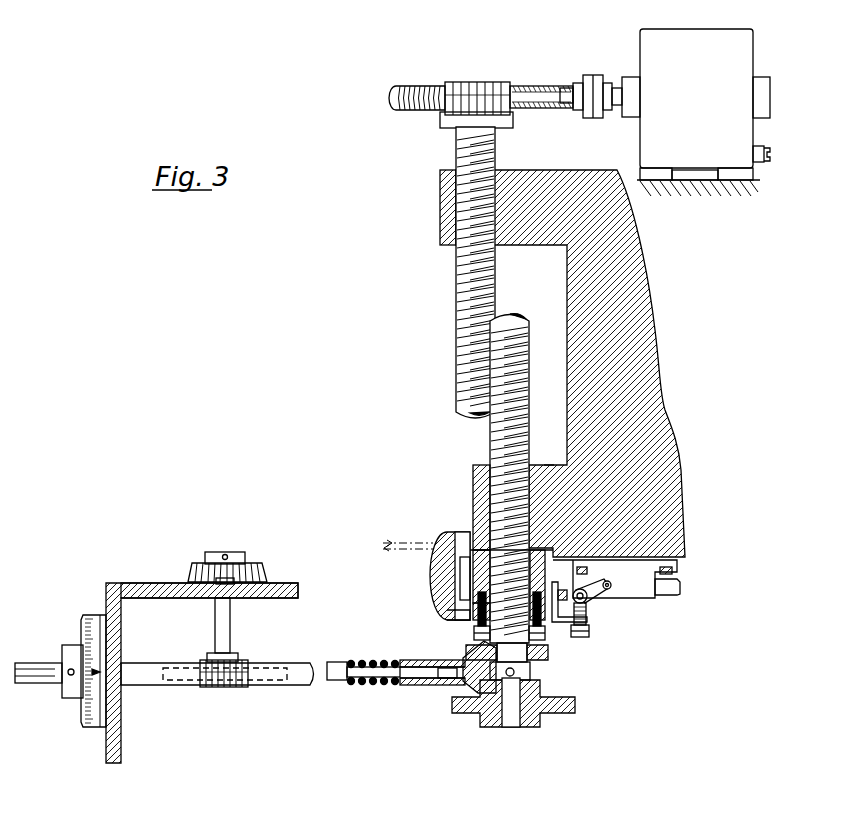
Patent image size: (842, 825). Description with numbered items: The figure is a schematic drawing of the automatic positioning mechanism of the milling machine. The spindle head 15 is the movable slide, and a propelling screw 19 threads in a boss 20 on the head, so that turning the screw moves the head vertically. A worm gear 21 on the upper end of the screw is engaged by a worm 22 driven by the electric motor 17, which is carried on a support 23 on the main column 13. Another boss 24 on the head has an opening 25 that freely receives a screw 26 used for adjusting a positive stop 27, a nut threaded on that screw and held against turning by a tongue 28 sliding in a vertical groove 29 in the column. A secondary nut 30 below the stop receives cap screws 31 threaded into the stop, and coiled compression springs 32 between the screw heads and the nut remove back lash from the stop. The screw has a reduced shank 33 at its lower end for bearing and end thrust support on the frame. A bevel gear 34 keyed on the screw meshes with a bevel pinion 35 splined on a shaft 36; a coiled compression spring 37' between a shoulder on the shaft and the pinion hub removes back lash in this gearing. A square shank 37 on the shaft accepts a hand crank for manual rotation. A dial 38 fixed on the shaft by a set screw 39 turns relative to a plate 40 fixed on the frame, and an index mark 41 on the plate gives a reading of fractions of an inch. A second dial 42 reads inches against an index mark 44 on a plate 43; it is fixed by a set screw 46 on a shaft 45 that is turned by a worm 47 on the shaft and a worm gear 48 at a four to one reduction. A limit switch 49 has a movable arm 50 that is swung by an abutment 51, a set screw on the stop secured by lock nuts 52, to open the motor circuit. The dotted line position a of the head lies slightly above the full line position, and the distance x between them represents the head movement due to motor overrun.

The main column 13 is at (450, 532).
The spindle head 15 is at (655, 297).
The electric motor 17 is at (688, 33).
The propelling screw 19 is at (458, 317).
The boss 20 is at (440, 218).
The worm gear 21 is at (403, 110).
The worm 22 is at (482, 81).
The support 23 is at (738, 193).
The boss 24 is at (472, 502).
The opening 25 is at (473, 485).
The screw 26 is at (532, 411).
The positive stop 27 is at (462, 580).
The tongue 28 is at (458, 604).
The vertical groove 29 is at (462, 617).
The secondary nut 30 is at (546, 614).
The cap screws 31 is at (541, 644).
The coiled compression springs 32 is at (477, 627).
The reduced shank 33 is at (510, 727).
The bevel gear 34 is at (533, 664).
The bevel pinion 35 is at (465, 687).
The shaft 36 is at (306, 686).
The square shank 37 is at (38, 688).
The coiled compression spring 37' is at (363, 691).
The dial 38 is at (90, 727).
The set screw 39 is at (70, 668).
The plate 40 is at (106, 613).
The index mark 41 is at (98, 672).
The dial 42 is at (268, 572).
The plate 43 is at (183, 583).
The index mark 44 is at (228, 582).
The shaft 45 is at (218, 618).
The set screw 46 is at (228, 554).
The worm 47 is at (242, 661).
The worm gear 48 is at (170, 683).
The limit switch 49 is at (638, 598).
The movable arm 50 is at (596, 600).
The abutment 51 is at (589, 610).
The lock nuts 52 is at (584, 637).
The dotted line position a is at (549, 470).
The distance x is at (388, 547).